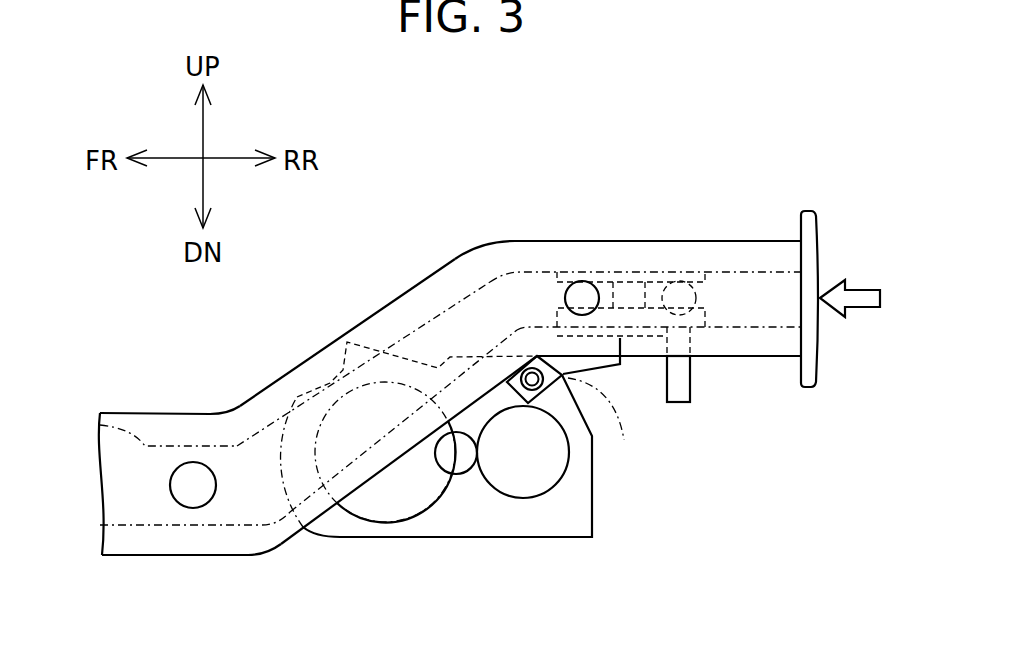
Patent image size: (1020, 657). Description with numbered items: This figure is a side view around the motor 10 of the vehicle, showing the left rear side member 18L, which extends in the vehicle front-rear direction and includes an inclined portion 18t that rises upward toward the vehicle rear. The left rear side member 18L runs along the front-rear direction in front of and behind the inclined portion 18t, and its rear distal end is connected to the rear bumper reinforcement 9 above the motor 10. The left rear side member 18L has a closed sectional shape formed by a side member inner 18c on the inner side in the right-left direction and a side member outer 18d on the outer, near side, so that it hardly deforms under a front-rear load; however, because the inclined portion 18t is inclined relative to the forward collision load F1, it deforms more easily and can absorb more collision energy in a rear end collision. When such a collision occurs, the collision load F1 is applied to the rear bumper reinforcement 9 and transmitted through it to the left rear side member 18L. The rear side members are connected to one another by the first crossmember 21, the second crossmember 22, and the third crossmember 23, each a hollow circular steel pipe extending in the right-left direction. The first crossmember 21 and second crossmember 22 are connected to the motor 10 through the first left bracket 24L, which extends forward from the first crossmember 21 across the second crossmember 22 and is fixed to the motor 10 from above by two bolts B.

The left rear side member 18L is at (410, 387).
The side member inner 18c is at (100, 426).
The side member outer 18d is at (295, 387).
The inclined portion 18t is at (443, 327).
The third crossmember 23 is at (182, 482).
The motor 10 is at (480, 523).
The bolt B is at (566, 377).
The first left bracket 24L is at (625, 253).
The second crossmember 22 is at (580, 281).
The first crossmember 21 is at (682, 281).
The rear bumper reinforcement 9 is at (818, 228).
The collision load F1 is at (862, 308).